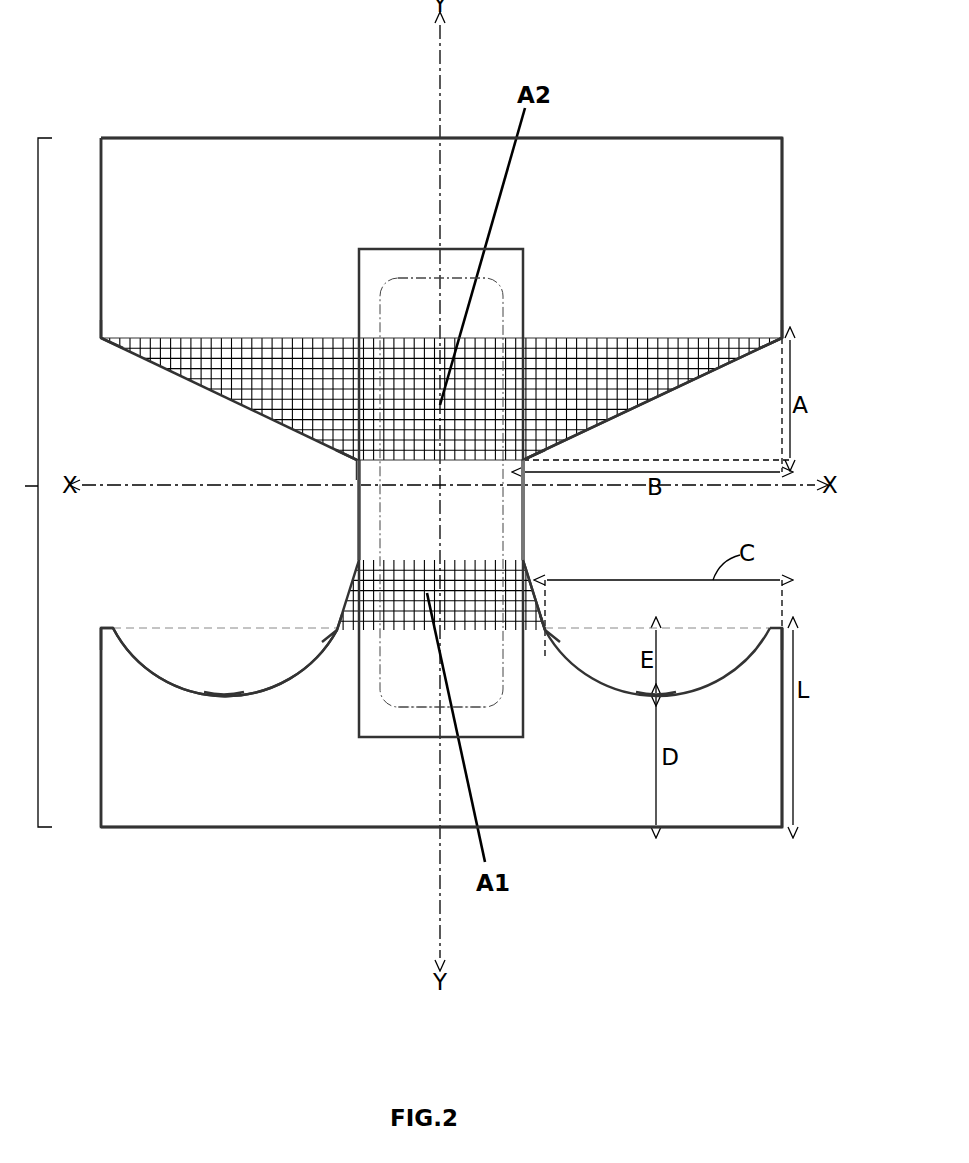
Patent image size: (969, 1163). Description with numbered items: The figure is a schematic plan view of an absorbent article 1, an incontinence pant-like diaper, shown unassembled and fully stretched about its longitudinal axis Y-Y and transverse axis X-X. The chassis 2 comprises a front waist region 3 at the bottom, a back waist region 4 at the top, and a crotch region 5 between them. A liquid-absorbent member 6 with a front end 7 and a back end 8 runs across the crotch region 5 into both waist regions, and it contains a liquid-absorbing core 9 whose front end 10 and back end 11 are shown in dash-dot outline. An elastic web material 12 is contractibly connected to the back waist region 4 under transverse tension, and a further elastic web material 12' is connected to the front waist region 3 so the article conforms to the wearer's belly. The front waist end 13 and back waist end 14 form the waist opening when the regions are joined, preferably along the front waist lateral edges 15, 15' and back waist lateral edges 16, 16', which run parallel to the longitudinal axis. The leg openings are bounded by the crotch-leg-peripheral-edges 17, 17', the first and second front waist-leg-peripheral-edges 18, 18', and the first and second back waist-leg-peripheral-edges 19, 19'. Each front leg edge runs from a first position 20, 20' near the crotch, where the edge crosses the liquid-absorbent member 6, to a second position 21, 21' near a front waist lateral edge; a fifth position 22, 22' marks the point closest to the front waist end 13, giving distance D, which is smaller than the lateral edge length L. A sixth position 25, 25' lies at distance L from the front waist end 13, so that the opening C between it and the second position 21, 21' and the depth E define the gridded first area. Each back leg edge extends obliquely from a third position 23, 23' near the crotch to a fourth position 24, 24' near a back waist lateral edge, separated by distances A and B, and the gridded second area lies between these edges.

The absorbent article 1 is at (703, 78).
The chassis 2 is at (29, 482).
The front waist region 3 is at (155, 762).
The back waist region 4 is at (155, 233).
The crotch region 5 is at (352, 463).
The liquid-absorbent member 6 is at (362, 397).
The front end of liquid-absorbent member 7 is at (312, 662).
The back end of liquid-absorbent member 8 is at (413, 249).
The liquid-absorbing core 9 is at (440, 505).
The front end of liquid-absorbing core 10 is at (408, 710).
The back end of liquid-absorbing core 11 is at (445, 278).
The elastic web material 12 is at (471, 238).
The elastic web material 12' is at (441, 759).
The front waist end 13 is at (283, 828).
The back waist end 14 is at (372, 138).
The front waist lateral edge 15 is at (810, 727).
The front waist lateral edge 15' is at (81, 727).
The back waist lateral edge 16 is at (803, 238).
The back waist lateral edge 16' is at (80, 238).
The crotch-leg-peripheral-edge 17 is at (587, 510).
The crotch-leg-peripheral-edge 17' is at (294, 510).
The first front waist-leg-peripheral-edge 18 is at (657, 637).
The second front waist-leg-peripheral-edge 18' is at (225, 631).
The first back waist-leg-peripheral-edge 19 is at (652, 399).
The second back waist-leg-peripheral-edge 19' is at (222, 399).
The first position 20 is at (564, 595).
The first position 20' is at (326, 595).
The second position 21 is at (804, 622).
The second position 21' is at (90, 620).
The fifth position 22 is at (677, 663).
The fifth position 22' is at (205, 663).
The third position 23 is at (573, 456).
The third position 23' is at (265, 466).
The fourth position 24 is at (799, 331).
The fourth position 24' is at (78, 340).
The sixth position 25 is at (576, 618).
The sixth position 25' is at (308, 619).